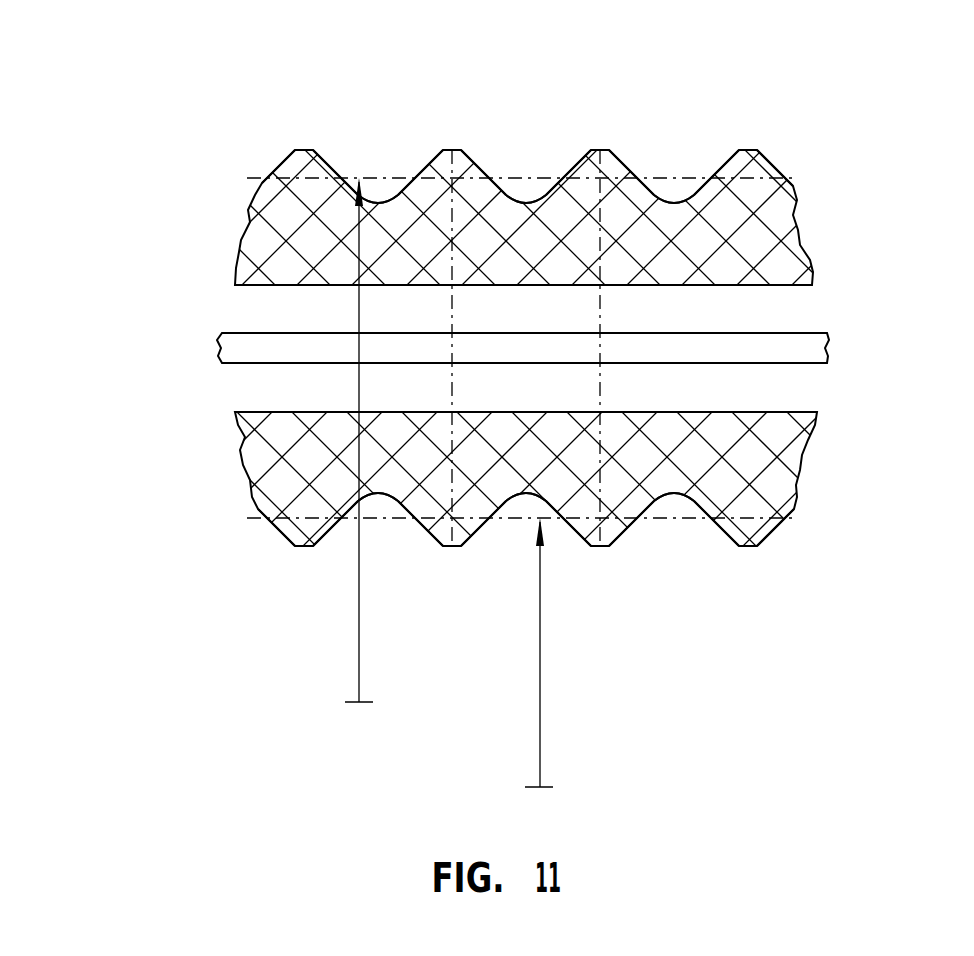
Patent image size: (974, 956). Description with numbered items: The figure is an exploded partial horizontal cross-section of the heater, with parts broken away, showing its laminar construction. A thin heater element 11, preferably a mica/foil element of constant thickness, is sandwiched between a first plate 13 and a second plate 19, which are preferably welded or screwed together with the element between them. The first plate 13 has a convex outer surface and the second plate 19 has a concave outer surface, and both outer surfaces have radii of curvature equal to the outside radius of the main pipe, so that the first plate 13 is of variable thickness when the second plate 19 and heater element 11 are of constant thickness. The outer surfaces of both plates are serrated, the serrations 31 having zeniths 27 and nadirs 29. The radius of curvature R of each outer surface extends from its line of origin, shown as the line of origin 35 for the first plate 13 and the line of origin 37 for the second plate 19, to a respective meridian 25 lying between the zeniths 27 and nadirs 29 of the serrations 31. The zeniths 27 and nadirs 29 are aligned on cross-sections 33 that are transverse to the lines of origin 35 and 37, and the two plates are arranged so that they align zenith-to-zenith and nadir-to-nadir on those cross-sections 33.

The heater element 11 is at (827, 333).
The first plate 13 is at (265, 237).
The second plate 19 is at (252, 448).
The meridians 25 is at (790, 177).
The zeniths 27 is at (298, 148).
The nadirs 29 is at (387, 203).
The serrations 31 is at (290, 167).
The cross-sections 33 is at (452, 310).
The line of origin 35 is at (356, 704).
The line of origin 37 is at (541, 789).